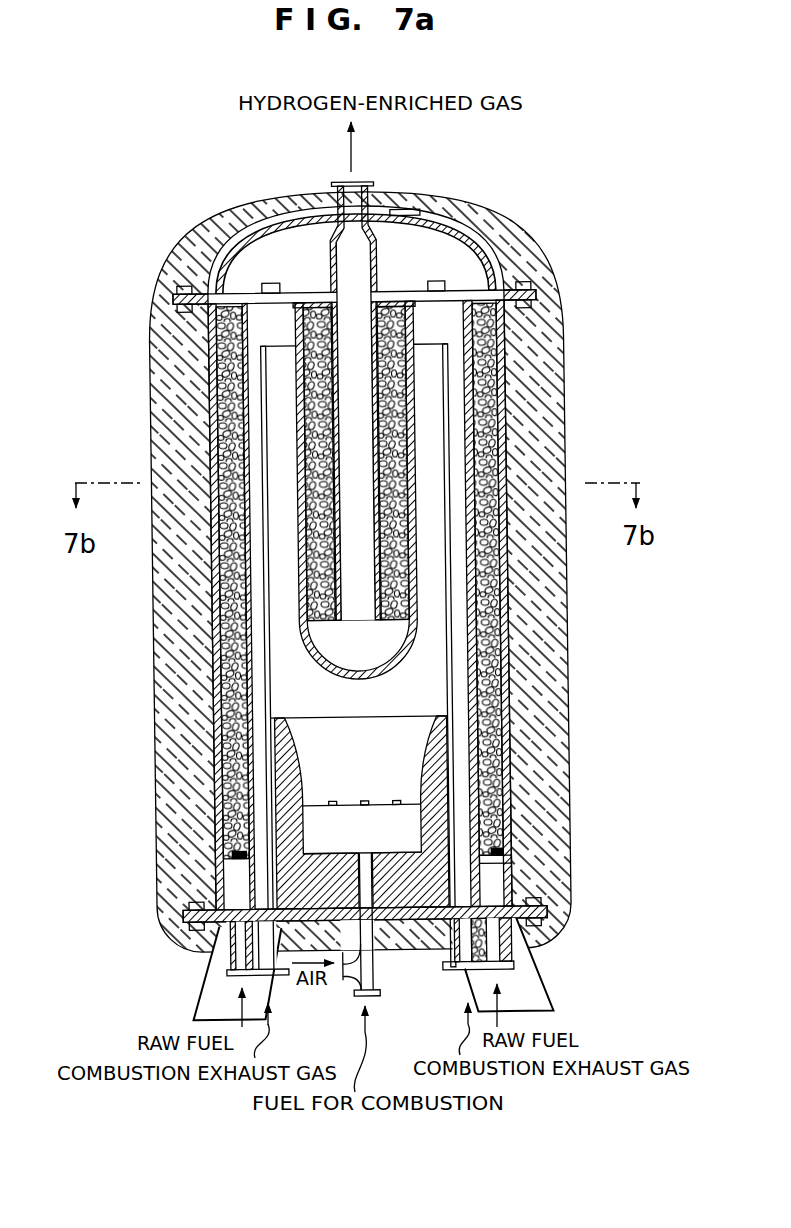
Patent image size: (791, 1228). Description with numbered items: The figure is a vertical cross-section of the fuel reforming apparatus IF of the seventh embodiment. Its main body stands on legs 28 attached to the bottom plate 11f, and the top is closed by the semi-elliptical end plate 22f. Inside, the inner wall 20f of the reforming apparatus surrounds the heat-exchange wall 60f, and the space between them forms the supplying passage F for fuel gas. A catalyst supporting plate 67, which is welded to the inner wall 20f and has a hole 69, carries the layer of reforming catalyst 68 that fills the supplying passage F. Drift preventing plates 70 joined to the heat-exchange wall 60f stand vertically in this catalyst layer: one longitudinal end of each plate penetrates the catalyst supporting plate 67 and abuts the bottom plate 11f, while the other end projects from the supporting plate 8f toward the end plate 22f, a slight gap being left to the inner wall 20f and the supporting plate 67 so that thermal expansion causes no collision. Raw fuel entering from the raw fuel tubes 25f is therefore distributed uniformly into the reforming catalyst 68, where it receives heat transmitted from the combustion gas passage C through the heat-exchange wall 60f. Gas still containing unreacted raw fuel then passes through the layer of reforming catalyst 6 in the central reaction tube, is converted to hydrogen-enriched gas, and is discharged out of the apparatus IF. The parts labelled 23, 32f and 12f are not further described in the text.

The fuel reforming apparatus IF is at (563, 172).
The end plate 22f is at (262, 232).
The hydrogen-enriched gas outlet 23 is at (403, 210).
The supporting plate 8f is at (289, 300).
The drift preventing plates 70 is at (440, 290).
The layered wall assembly 32f is at (96, 620).
The heat-exchange wall 60f is at (233, 630).
The inner tube 12f is at (267, 656).
The inner wall of the reforming apparatus 20f is at (223, 700).
The supplying passage for fuel gas F is at (230, 755).
The combustion gas passage C is at (283, 374).
The reforming catalyst 6 is at (380, 315).
The reforming catalyst 68 is at (500, 665).
The catalyst supporting plate 67 is at (500, 845).
The hole 69 is at (500, 861).
The bottom plate 11f is at (548, 912).
The legs 28 is at (545, 1013).
The raw fuel tubes 25f is at (510, 956).